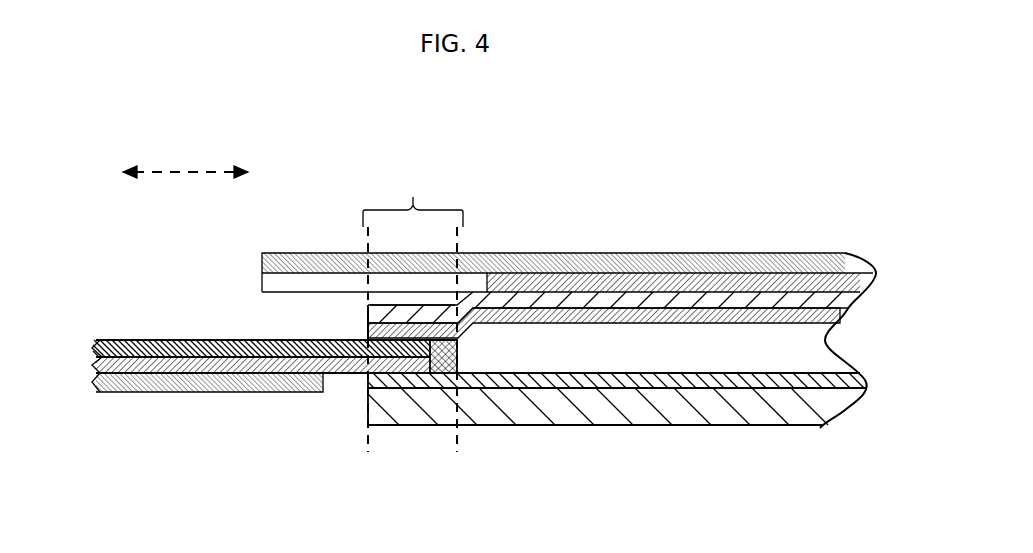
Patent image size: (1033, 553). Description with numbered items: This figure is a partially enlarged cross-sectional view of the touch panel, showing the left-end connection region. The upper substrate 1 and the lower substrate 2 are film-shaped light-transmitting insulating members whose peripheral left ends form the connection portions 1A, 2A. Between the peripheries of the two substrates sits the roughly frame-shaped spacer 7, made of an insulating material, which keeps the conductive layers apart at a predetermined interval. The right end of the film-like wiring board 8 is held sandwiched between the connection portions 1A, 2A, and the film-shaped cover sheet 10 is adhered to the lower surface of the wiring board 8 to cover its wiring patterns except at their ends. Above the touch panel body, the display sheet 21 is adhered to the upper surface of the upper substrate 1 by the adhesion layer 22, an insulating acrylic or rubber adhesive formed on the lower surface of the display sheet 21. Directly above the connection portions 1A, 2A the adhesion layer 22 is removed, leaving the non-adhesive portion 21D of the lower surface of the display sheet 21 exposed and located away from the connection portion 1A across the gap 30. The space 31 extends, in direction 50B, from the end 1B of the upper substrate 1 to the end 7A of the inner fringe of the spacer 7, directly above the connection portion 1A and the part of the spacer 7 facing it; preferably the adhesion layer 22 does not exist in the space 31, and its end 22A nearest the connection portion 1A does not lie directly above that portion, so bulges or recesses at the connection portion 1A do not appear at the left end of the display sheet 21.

The upper substrate 1 is at (813, 300).
The connection portion 1A is at (425, 317).
The end of upper substrate 1B is at (367, 313).
The lower substrate 2 is at (713, 410).
The connection portion 2A is at (408, 410).
The spacer 7 is at (460, 389).
The end of inner fringe of spacer 7A is at (458, 357).
The wiring board 8 is at (190, 350).
The cover sheet 10 is at (180, 385).
The display sheet 21 is at (617, 265).
The non-adhesive portion 21D is at (305, 275).
The adhesion layer 22 is at (733, 280).
The end of space 22A is at (490, 284).
The gap 30 is at (443, 285).
The space 31 is at (413, 196).
The direction 50B is at (174, 172).